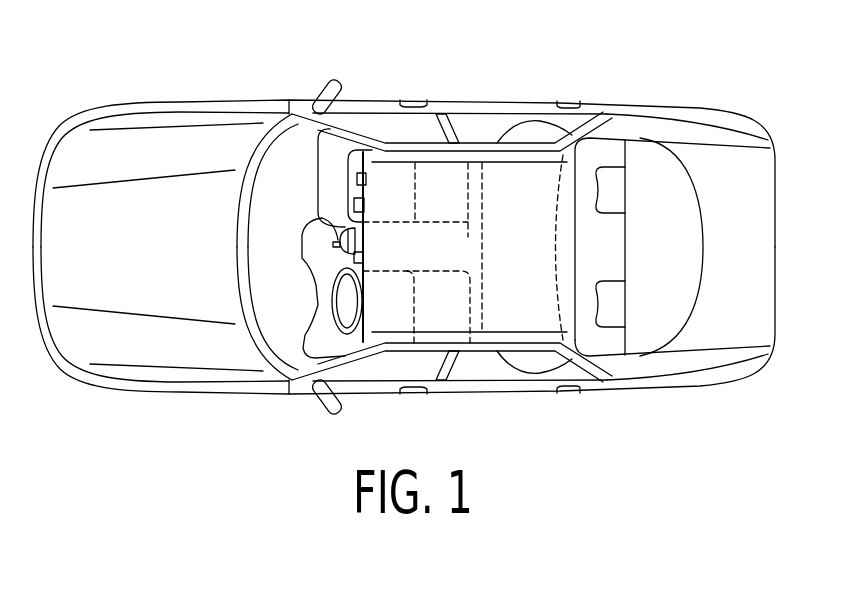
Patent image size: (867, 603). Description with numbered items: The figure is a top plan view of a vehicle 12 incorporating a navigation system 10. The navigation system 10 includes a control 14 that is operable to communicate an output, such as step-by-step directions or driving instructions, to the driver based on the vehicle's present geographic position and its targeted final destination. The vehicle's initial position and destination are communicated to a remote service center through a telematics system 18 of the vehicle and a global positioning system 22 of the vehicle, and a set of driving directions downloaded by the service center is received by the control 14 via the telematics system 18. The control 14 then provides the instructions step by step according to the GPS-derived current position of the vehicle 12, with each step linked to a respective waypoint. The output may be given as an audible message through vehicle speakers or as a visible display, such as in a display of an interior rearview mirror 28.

The navigation system 10 is at (270, 211).
The vehicle 12 is at (193, 78).
The control 14 is at (364, 258).
The telematics system 18 is at (366, 204).
The global positioning system 22 is at (367, 178).
The interior rearview mirror 28 is at (362, 242).